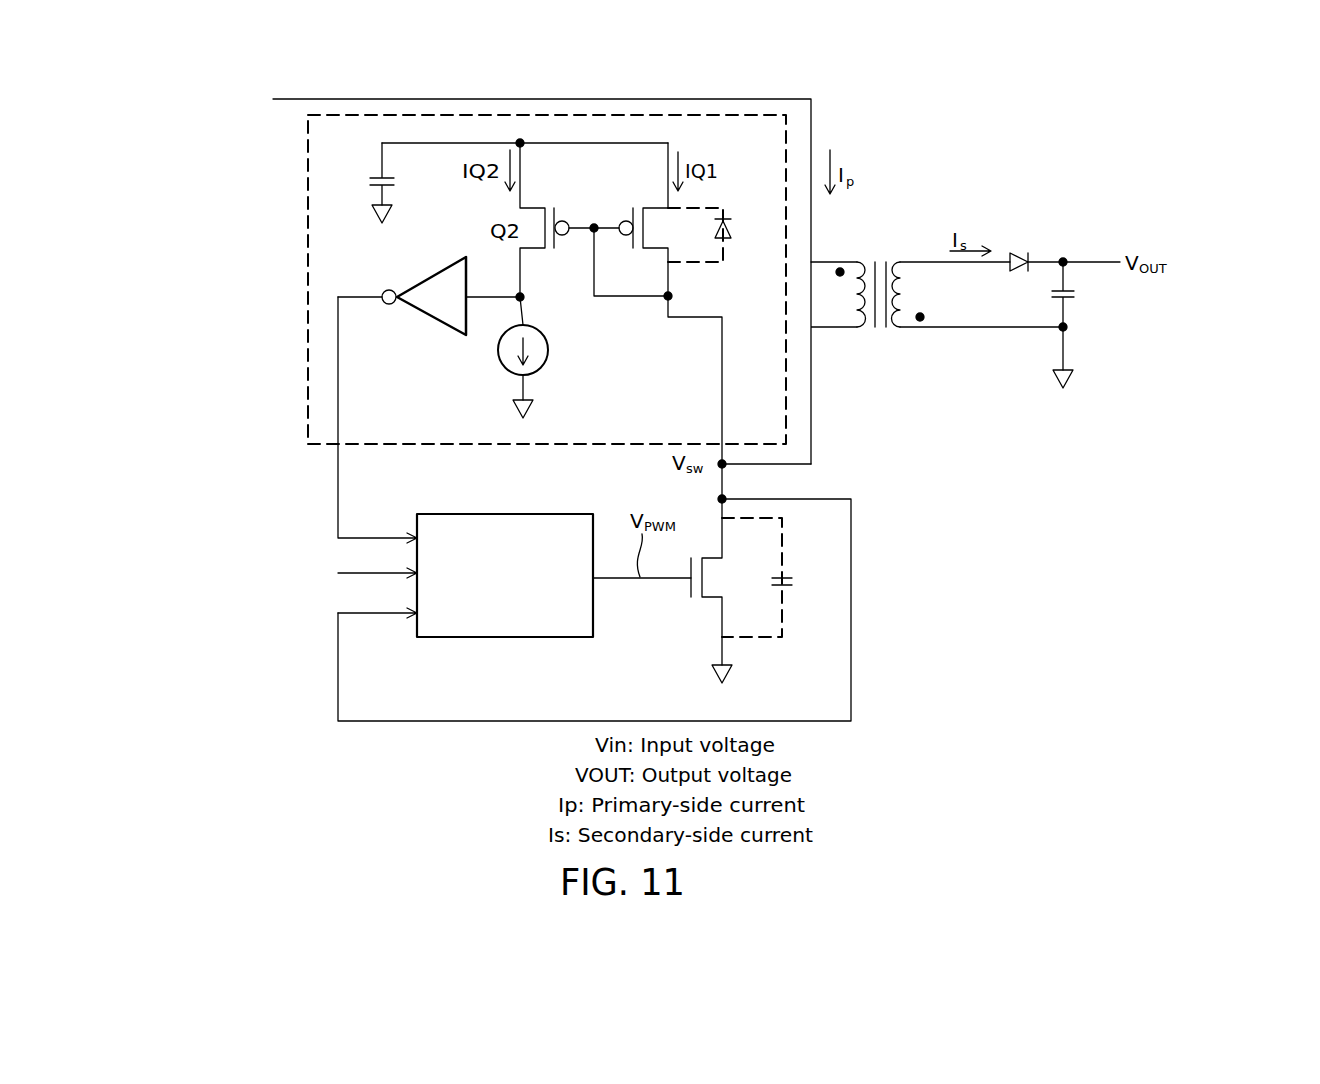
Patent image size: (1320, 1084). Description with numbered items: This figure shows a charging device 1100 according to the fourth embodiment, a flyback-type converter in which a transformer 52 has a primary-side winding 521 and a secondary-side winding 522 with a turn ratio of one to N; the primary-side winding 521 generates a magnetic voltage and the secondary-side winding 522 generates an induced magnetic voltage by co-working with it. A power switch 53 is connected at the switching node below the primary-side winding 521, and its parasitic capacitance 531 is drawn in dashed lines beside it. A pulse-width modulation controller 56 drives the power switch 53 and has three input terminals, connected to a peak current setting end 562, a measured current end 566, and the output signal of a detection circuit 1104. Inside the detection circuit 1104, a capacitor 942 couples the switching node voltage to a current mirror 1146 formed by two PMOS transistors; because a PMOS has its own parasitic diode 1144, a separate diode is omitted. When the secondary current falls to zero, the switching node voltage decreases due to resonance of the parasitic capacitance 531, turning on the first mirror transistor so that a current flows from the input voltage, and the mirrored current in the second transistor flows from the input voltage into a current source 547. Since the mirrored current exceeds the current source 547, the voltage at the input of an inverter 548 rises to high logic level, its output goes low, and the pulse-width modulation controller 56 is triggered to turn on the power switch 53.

The charging device 1100 is at (1117, 162).
The detection circuit 1104 is at (308, 383).
The capacitor 942 is at (378, 186).
The inverter 548 is at (440, 272).
The current source 547 is at (498, 352).
The parasitic diode 1144 is at (757, 252).
The current mirror 1146 is at (608, 312).
The transformer 52 is at (883, 346).
The primary-side winding 521 is at (839, 294).
The secondary-side winding 522 is at (924, 294).
The pulse-width modulation controller 56 is at (500, 640).
The peak current setting end 562 is at (365, 573).
The measured current end 566 is at (338, 657).
The power switch 53 is at (712, 600).
The parasitic capacitance 531 is at (792, 581).